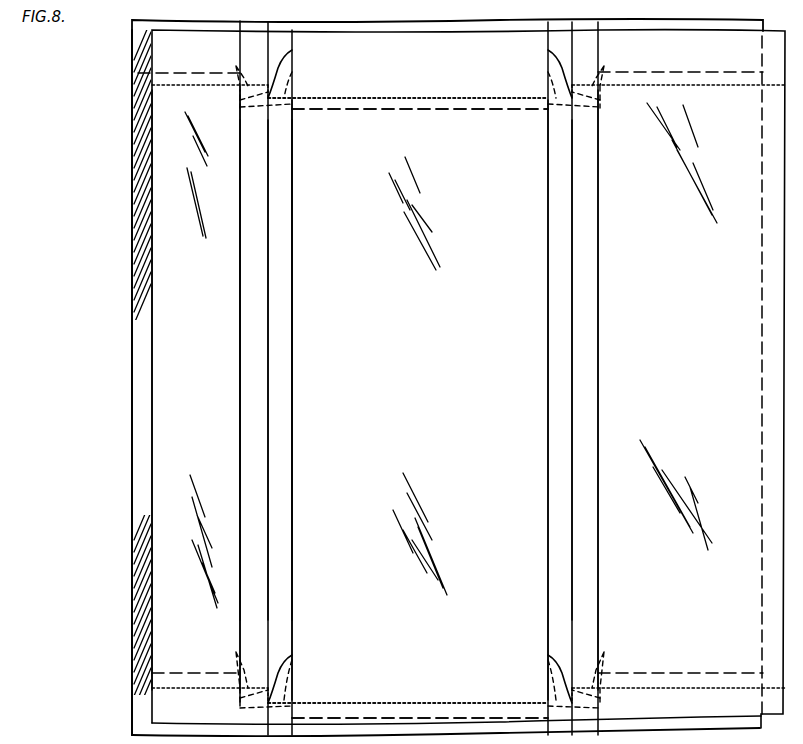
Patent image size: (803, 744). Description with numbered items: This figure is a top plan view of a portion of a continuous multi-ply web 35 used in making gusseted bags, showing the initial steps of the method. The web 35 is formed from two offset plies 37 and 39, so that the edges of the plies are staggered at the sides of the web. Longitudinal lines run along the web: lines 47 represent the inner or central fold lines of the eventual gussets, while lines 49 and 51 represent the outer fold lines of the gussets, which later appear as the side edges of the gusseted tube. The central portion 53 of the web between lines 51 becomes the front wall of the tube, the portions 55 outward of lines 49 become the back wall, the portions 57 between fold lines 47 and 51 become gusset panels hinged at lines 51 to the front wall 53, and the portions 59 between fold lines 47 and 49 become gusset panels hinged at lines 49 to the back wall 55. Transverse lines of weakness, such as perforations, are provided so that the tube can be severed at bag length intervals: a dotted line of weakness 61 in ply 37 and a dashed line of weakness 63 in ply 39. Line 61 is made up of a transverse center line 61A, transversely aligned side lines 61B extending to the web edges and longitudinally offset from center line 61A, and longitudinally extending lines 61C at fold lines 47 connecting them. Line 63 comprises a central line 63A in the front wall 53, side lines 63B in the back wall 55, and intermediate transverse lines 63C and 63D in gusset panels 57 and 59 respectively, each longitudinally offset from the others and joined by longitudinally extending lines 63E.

The multi-ply web 35 is at (126, 317).
The ply 37 is at (185, 212).
The ply 39 is at (140, 381).
The inner fold lines 47 is at (268, 350).
The outer fold lines 49 is at (240, 352).
The outer fold lines 51 is at (292, 308).
The front wall 53 is at (428, 398).
The back wall 55 is at (202, 426).
The gusset panels 57 is at (282, 398).
The gusset panels 59 is at (252, 388).
The line of weakness 61 is at (392, 95).
The transverse center line 61A is at (447, 96).
The transverse side line 61B is at (178, 92).
The longitudinally extending lines 61C is at (286, 60).
The line of weakness 63 is at (425, 111).
The central line 63A is at (350, 112).
The side lines 63B is at (146, 74).
The intermediate transverse line 63C is at (294, 84).
The intermediate transverse line 63D is at (236, 68).
The longitudinally extending lines 63E is at (240, 107).